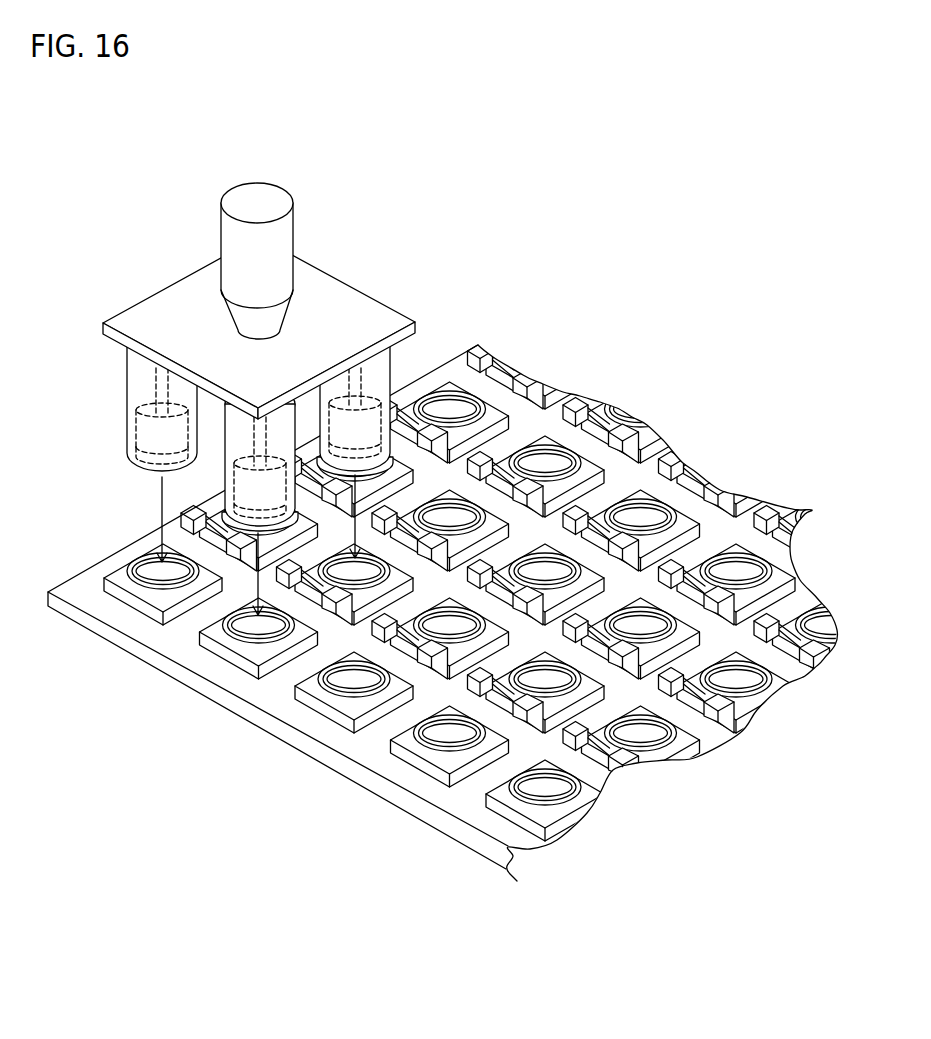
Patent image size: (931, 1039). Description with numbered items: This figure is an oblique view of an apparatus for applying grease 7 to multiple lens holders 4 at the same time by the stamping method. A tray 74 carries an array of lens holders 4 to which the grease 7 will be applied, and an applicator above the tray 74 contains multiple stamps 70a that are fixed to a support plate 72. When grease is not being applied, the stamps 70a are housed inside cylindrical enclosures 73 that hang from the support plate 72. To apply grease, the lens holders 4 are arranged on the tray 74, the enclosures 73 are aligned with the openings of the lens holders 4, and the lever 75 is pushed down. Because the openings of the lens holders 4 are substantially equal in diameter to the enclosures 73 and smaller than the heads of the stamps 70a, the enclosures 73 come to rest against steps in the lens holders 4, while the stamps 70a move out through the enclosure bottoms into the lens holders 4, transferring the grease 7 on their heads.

The lens holder 4 is at (142, 607).
The grease 7 is at (127, 463).
The stamp 70a is at (127, 432).
The support plate 72 is at (375, 306).
The cylindrical enclosure 73 is at (132, 384).
The tray 74 is at (100, 569).
The lever 75 is at (255, 190).